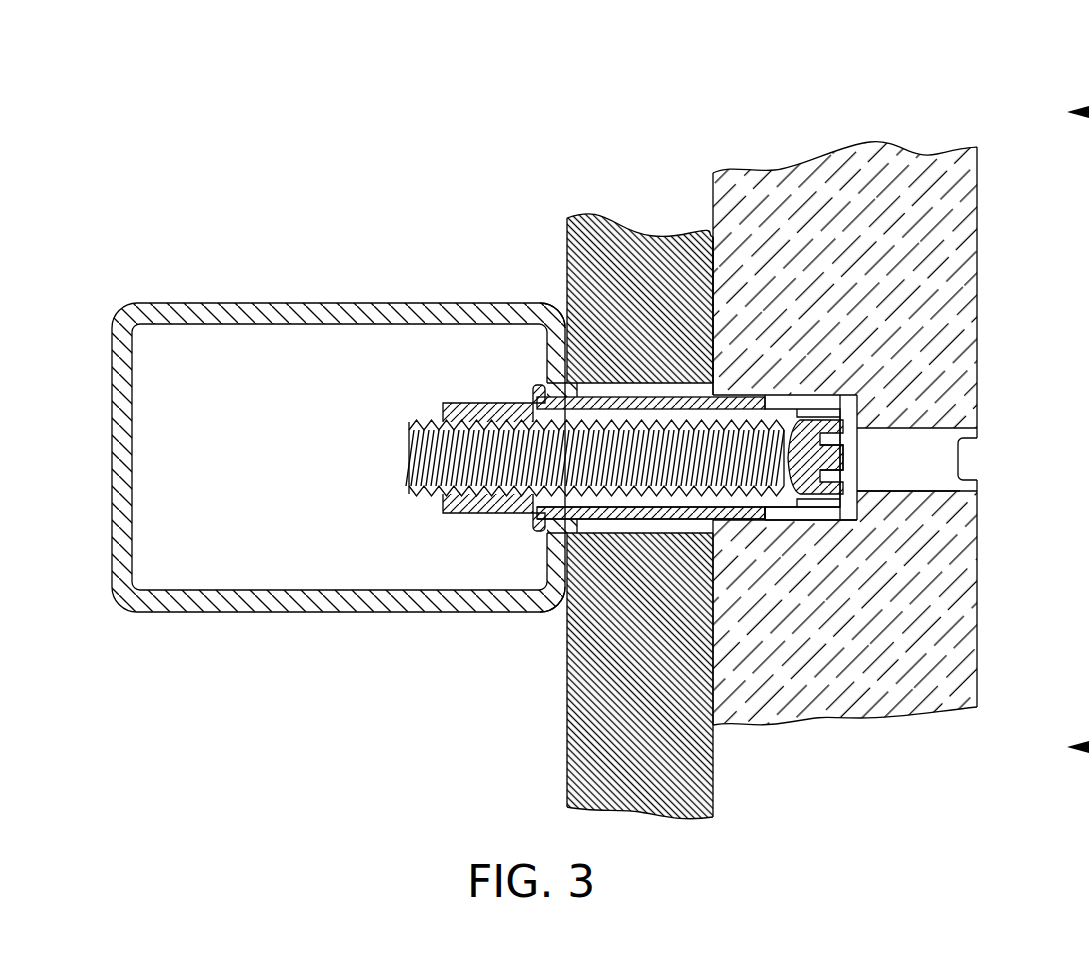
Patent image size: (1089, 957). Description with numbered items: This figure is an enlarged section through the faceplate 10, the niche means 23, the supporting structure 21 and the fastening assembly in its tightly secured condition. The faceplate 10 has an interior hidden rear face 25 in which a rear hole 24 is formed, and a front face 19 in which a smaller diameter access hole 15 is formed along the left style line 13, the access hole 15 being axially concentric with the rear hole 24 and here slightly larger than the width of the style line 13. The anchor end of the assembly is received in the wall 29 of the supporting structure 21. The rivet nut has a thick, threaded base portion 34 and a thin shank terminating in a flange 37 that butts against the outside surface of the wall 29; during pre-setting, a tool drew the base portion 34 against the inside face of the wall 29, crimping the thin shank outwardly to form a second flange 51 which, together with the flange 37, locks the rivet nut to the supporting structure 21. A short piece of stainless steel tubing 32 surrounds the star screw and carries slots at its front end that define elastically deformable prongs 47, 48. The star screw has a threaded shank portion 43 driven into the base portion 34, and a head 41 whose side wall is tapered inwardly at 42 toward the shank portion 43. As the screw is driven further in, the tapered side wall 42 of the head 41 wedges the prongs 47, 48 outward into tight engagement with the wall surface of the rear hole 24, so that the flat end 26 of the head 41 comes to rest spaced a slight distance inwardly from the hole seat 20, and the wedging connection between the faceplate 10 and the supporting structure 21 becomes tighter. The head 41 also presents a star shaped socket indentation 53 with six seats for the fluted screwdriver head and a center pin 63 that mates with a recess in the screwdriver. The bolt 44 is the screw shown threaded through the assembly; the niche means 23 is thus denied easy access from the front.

The faceplate 10 is at (1015, 138).
The left style line 13 is at (958, 462).
The access hole 15 is at (935, 483).
The front face 19 is at (978, 248).
The hole seat 20 is at (830, 503).
The supporting structure 21 is at (268, 613).
The niche means 23 is at (562, 744).
The rear hole 24 is at (748, 393).
The rear face 25 is at (710, 203).
The flat end 26 is at (860, 407).
The wall 29 is at (483, 305).
The tubing 32 is at (617, 392).
The thick base portion 34 is at (470, 515).
The flange 37 is at (592, 522).
The head 41 is at (833, 505).
The tapered side wall 42 is at (822, 507).
The shank portion 43 is at (423, 493).
The bolt 44 is at (409, 455).
The prong 47 is at (797, 393).
The prong 48 is at (790, 518).
The flange 51 is at (540, 383).
The socket indentation 53 is at (850, 490).
The center pin 63 is at (835, 455).